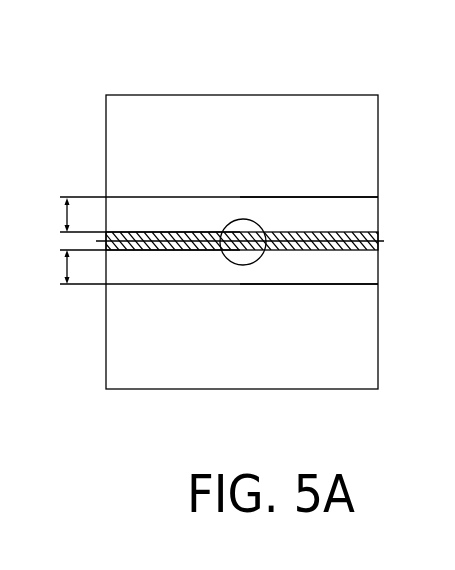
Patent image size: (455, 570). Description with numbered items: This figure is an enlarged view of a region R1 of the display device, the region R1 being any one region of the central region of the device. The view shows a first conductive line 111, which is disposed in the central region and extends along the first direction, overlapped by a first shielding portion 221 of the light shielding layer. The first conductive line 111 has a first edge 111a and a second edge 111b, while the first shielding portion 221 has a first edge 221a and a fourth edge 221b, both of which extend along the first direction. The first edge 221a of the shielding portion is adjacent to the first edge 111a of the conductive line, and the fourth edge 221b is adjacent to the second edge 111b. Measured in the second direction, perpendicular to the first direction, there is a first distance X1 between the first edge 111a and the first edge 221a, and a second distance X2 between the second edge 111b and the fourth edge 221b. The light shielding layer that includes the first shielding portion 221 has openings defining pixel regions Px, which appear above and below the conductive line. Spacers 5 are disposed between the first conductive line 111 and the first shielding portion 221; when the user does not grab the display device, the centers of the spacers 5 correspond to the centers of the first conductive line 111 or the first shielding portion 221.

The region R1 is at (237, 76).
The pixel regions Px is at (243, 241).
The spacers 5 is at (262, 256).
The first conductive line 111 is at (362, 233).
The first edge 111a is at (141, 232).
The second edge 111b is at (138, 284).
The first shielding portion 221 is at (360, 212).
The first edge 221a is at (342, 198).
The fourth edge 221b is at (337, 285).
The first distance X1 is at (65, 214).
The second distance X2 is at (65, 267).